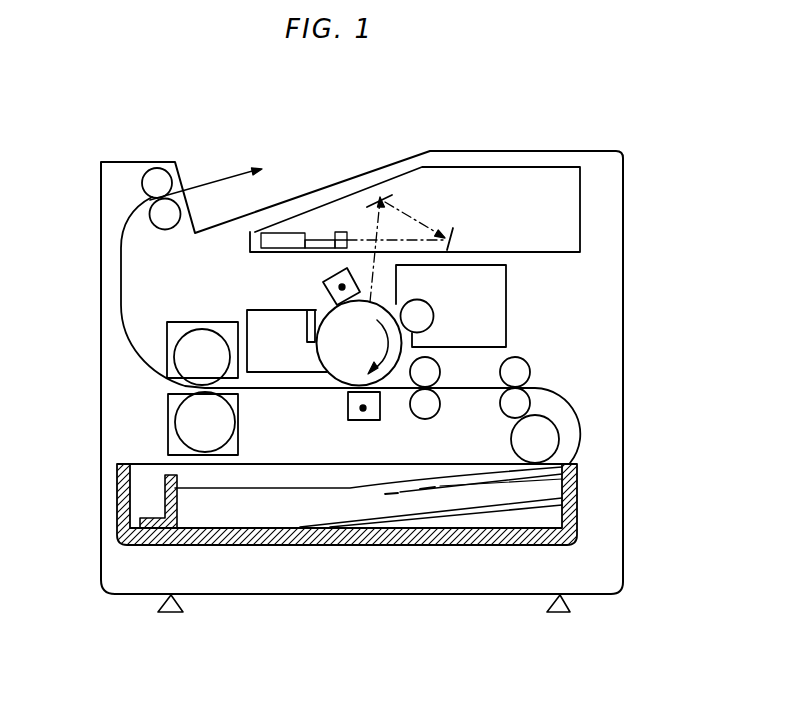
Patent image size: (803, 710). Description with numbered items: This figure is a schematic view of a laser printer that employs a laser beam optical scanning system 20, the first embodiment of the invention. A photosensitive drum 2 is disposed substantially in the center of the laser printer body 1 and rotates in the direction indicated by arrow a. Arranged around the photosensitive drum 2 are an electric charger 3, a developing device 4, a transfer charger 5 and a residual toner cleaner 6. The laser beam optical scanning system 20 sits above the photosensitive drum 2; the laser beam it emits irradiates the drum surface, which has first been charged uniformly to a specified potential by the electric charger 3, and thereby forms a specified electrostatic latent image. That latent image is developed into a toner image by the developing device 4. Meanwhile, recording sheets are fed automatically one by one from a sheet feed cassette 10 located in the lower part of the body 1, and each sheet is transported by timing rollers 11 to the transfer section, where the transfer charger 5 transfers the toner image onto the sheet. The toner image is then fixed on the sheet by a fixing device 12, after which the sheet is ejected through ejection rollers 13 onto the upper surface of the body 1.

The laser printer body 1 is at (632, 270).
The photosensitive drum 2 is at (327, 381).
The electric charger 3 is at (323, 279).
The developing device 4 is at (507, 290).
The transfer charger 5 is at (360, 421).
The residual toner cleaner 6 is at (257, 310).
The sheet feed cassette 10 is at (405, 547).
The timing rollers 11 is at (437, 411).
The fixing device 12 is at (157, 405).
The ejection rollers 13 is at (153, 163).
The laser beam optical scanning system 20 is at (474, 160).